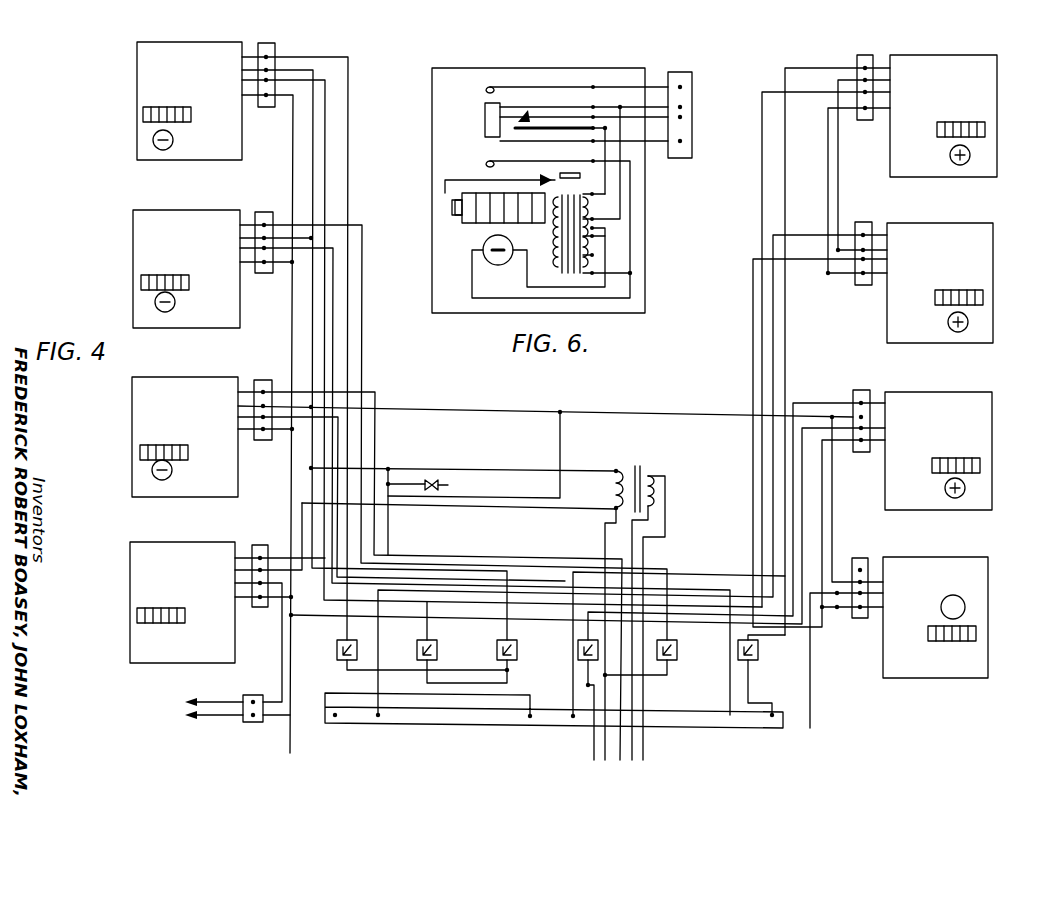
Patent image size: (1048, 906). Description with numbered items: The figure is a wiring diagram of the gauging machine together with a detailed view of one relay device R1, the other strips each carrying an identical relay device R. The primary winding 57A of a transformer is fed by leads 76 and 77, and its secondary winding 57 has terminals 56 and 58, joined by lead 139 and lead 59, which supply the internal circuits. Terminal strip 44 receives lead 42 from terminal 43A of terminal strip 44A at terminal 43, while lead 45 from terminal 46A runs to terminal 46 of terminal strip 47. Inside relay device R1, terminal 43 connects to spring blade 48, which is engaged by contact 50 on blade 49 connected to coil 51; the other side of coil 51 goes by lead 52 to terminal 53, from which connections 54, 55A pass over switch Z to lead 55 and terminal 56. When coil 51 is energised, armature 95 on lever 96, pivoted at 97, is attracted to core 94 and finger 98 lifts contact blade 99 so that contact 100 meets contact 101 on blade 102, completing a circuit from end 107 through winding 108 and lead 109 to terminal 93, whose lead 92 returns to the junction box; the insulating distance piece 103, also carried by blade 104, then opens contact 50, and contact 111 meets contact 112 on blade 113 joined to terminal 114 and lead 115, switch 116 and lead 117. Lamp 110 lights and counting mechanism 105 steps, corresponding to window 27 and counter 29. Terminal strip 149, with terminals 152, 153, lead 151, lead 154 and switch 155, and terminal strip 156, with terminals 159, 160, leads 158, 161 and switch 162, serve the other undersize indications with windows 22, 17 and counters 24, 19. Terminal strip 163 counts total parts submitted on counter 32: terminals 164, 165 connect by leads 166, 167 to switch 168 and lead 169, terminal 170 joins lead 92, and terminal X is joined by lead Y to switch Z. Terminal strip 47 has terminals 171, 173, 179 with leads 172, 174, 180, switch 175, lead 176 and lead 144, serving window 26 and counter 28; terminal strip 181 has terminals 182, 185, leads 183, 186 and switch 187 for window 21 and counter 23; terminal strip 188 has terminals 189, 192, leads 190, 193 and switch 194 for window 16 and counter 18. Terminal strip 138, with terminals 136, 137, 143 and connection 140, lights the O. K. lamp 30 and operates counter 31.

In FIG. 4, the relay device R1 is at (137, 72).
In FIG. 6, the relay device R1 is at (624, 70).
In FIG. 4, the relay device R is at (133, 240).
In FIG. 4, the counting device 29 is at (143, 115).
In FIG. 4, the signal window 27 is at (153, 140).
In FIG. 4, the terminal strip 44 is at (266, 43).
In FIG. 6, the terminal strip 44 is at (676, 72).
In FIG. 4, the terminal 114 is at (262, 52).
In FIG. 6, the terminal 114 is at (684, 84).
In FIG. 4, the terminal 53 is at (266, 68).
In FIG. 6, the terminal 53 is at (692, 104).
In FIG. 4, the terminal 43 is at (268, 80).
In FIG. 6, the terminal 43 is at (692, 118).
In FIG. 4, the terminal 93 is at (266, 107).
In FIG. 6, the terminal 93 is at (692, 141).
In FIG. 4, the lead 115 is at (353, 60).
In FIG. 4, the connection 54 is at (293, 118).
In FIG. 4, the counting device 24 is at (141, 282).
In FIG. 4, the signal light 22 is at (155, 302).
In FIG. 4, the terminal strip 149 is at (264, 212).
In FIG. 4, the terminal 153 is at (262, 222).
In FIG. 4, the terminal 152 is at (262, 248).
In FIG. 4, the lead 154 is at (347, 230).
In FIG. 4, the indicating mechanism 19 is at (140, 452).
In FIG. 4, the signal window 17 is at (152, 470).
In FIG. 4, the terminal strip 156 is at (263, 380).
In FIG. 4, the terminal 160 is at (262, 390).
In FIG. 4, the terminal 159 is at (262, 417).
In FIG. 4, the lead 161 is at (375, 392).
In FIG. 4, the lead 139 is at (672, 396).
In FIG. 4, the lead 42 is at (343, 430).
In FIG. 4, the lead 158 is at (343, 448).
In FIG. 4, the lead 55 is at (474, 466).
In FIG. 4, the connection 55A is at (560, 448).
In FIG. 4, the terminal 56 is at (614, 468).
In FIG. 4, the secondary winding 57 is at (637, 468).
In FIG. 4, the primary winding 57A is at (660, 490).
In FIG. 4, the terminal 58 is at (612, 510).
In FIG. 4, the lead 59 is at (620, 548).
In FIG. 4, the lead Y is at (388, 522).
In FIG. 4, the switch Z is at (445, 485).
In FIG. 4, the counting device 32 is at (137, 615).
In FIG. 4, the terminal strip 163 is at (260, 545).
In FIG. 4, the lead 166 is at (278, 540).
In FIG. 4, the terminal X is at (258, 556).
In FIG. 4, the terminal 164 is at (258, 568).
In FIG. 4, the terminal 165 is at (258, 585).
In FIG. 4, the terminal 170 is at (262, 607).
In FIG. 4, the lead 167 is at (282, 645).
In FIG. 4, the switch 168 is at (226, 690).
In FIG. 4, the lead 169 is at (263, 722).
In FIG. 4, the lead 92 is at (290, 755).
In FIG. 4, the lead 186 is at (773, 242).
In FIG. 4, the switch 116 is at (360, 640).
In FIG. 4, the switch 175 is at (428, 640).
In FIG. 4, the lead 117 is at (408, 648).
In FIG. 4, the lead 176 is at (452, 683).
In FIG. 4, the switch 155 is at (517, 650).
In FIG. 4, the switch 187 is at (598, 650).
In FIG. 4, the switch 162 is at (677, 652).
In FIG. 4, the lead 144 is at (775, 630).
In FIG. 4, the switch 194 is at (754, 666).
In FIG. 4, the lead 151 is at (528, 722).
In FIG. 4, the terminal 43A is at (335, 720).
In FIG. 4, the terminal 46A is at (378, 720).
In FIG. 4, the terminal strip 44A is at (470, 722).
In FIG. 4, the lead 76 is at (632, 756).
In FIG. 4, the lead 77 is at (645, 740).
In FIG. 4, the connection 140 is at (810, 712).
In FIG. 4, the lead 45 is at (753, 530).
In FIG. 4, the terminal strip 47 is at (865, 56).
In FIG. 4, the terminal 173 is at (866, 68).
In FIG. 4, the lead 174 is at (786, 68).
In FIG. 4, the terminal 171 is at (873, 80).
In FIG. 4, the terminal 46 is at (864, 92).
In FIG. 4, the terminal 179 is at (865, 120).
In FIG. 4, the lead 172 is at (838, 184).
In FIG. 4, the lead 180 is at (828, 176).
In FIG. 4, the counting device 28 is at (985, 129).
In FIG. 4, the signal window 26 is at (970, 155).
In FIG. 4, the terminal strip 181 is at (870, 208).
In FIG. 4, the terminal 185 is at (864, 235).
In FIG. 4, the terminal 182 is at (872, 259).
In FIG. 4, the lead 183 is at (808, 262).
In FIG. 4, the counting device 23 is at (983, 297).
In FIG. 4, the signal light 21 is at (968, 322).
In FIG. 4, the terminal strip 188 is at (868, 376).
In FIG. 4, the terminal 192 is at (862, 403).
In FIG. 4, the terminal 189 is at (870, 428).
In FIG. 4, the lead 193 is at (793, 500).
In FIG. 4, the lead 190 is at (802, 476).
In FIG. 4, the indicating mechanism 18 is at (980, 465).
In FIG. 4, the signal window 16 is at (965, 488).
In FIG. 4, the terminal strip 138 is at (860, 558).
In FIG. 4, the terminal 136 is at (868, 572).
In FIG. 4, the terminal 137 is at (868, 584).
In FIG. 4, the terminal 143 is at (860, 618).
In FIG. 4, the O. K. lamp 30 is at (965, 607).
In FIG. 4, the counting device 31 is at (976, 633).
In FIG. 6, the blade 102 is at (485, 110).
In FIG. 6, the contact 101 is at (500, 136).
In FIG. 6, the distance piece 103 is at (485, 100).
In FIG. 6, the contact 111 is at (486, 84).
In FIG. 6, the contact 112 is at (494, 84).
In FIG. 6, the contact 50 is at (506, 104).
In FIG. 6, the blade 104 is at (524, 112).
In FIG. 6, the blade 49 is at (530, 126).
In FIG. 6, the blade 113 is at (565, 116).
In FIG. 6, the spring blade 48 is at (598, 126).
In FIG. 6, the contact blade 99 is at (488, 160).
In FIG. 6, the contact 100 is at (495, 158).
In FIG. 6, the finger 98 is at (470, 180).
In FIG. 6, the lever 96 is at (518, 180).
In FIG. 6, the pivot 97 is at (542, 176).
In FIG. 6, the armature 95 is at (574, 174).
In FIG. 6, the counting mechanism 105 is at (462, 222).
In FIG. 6, the signal lamp 110 is at (486, 256).
In FIG. 6, the core 94 is at (562, 228).
In FIG. 6, the coil 51 is at (610, 198).
In FIG. 6, the lead 52 is at (622, 222).
In FIG. 6, the end of winding 107 is at (608, 240).
In FIG. 6, the winding 108 is at (596, 256).
In FIG. 6, the lead 109 is at (632, 273).